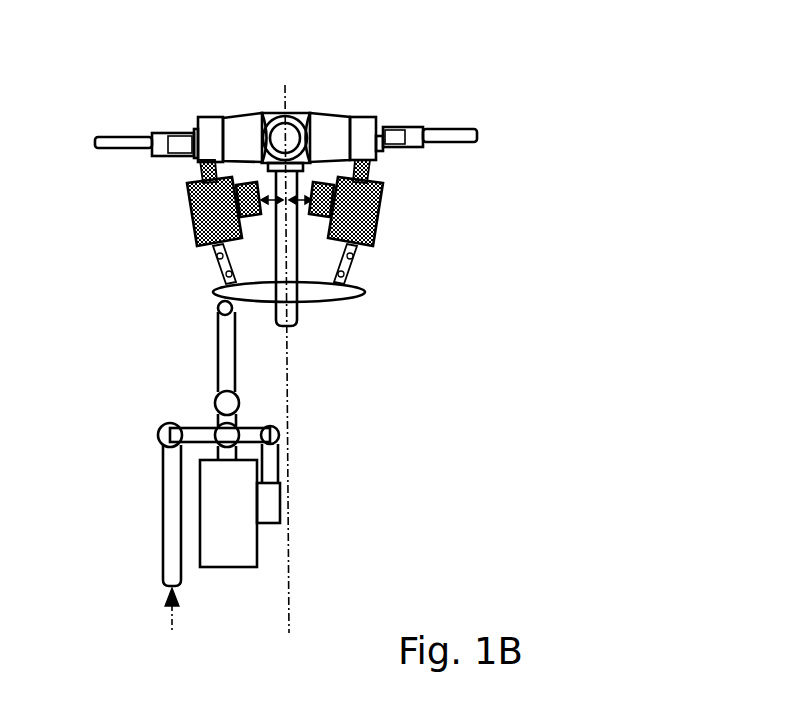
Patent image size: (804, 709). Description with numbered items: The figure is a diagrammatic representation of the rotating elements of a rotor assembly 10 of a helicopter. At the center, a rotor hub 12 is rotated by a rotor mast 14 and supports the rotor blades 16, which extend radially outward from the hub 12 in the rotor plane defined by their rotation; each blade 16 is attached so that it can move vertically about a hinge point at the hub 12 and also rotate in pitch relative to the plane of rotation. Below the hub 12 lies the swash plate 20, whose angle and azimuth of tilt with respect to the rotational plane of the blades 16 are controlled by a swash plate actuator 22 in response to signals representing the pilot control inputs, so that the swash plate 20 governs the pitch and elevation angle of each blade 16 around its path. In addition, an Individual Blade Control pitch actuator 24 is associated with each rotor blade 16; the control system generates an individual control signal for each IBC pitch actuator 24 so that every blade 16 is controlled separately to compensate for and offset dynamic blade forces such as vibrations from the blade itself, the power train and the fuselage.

The rotor assembly 10 is at (588, 237).
The rotor hub 12 is at (297, 105).
The rotor mast 14 is at (303, 330).
The rotor blades 16 is at (114, 136).
The swash plate 20 is at (350, 305).
The swash plate actuator 22 is at (190, 503).
The IBC pitch actuator 24 is at (185, 226).